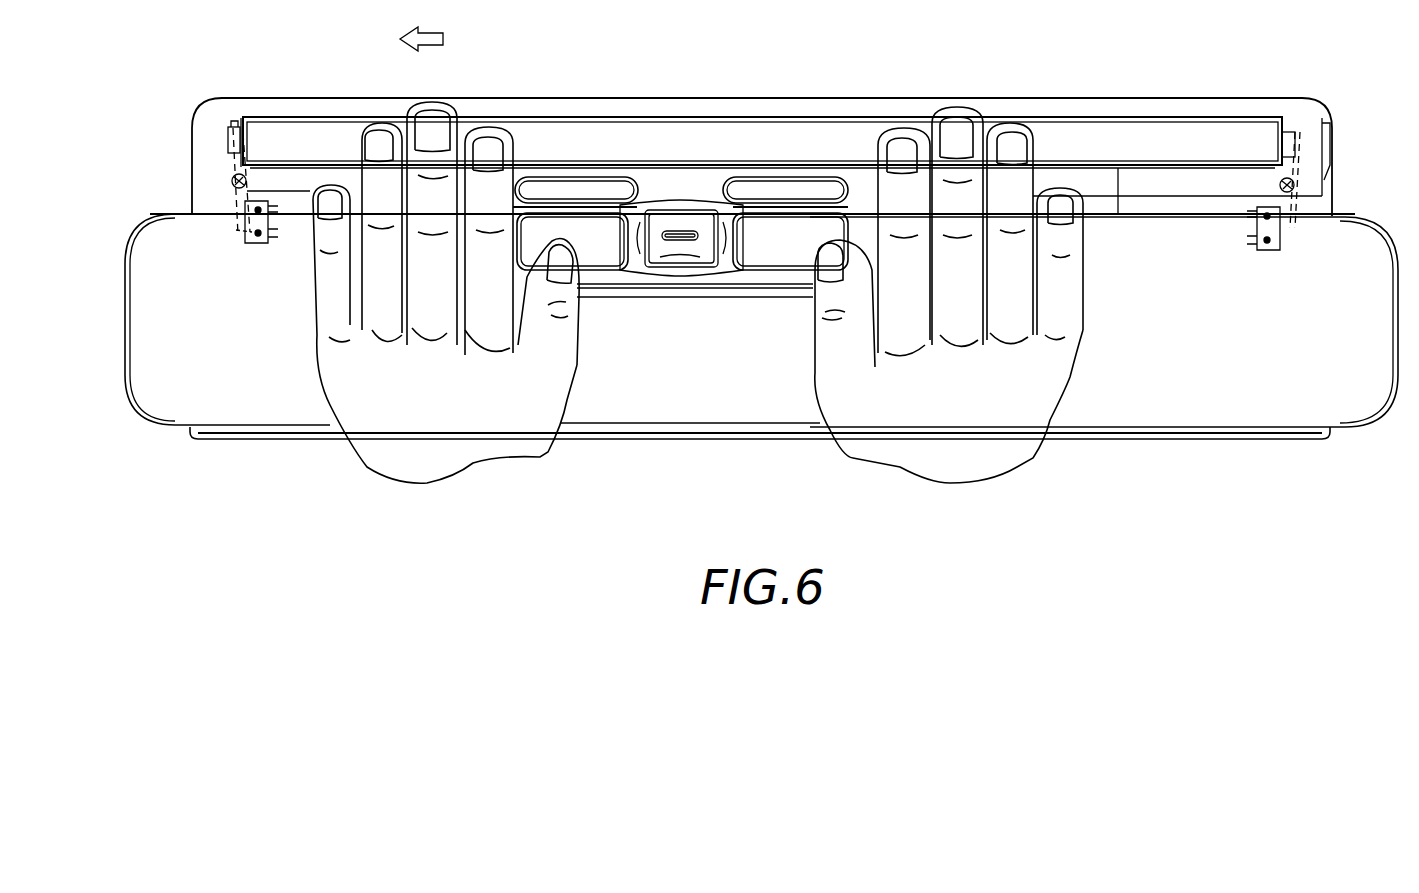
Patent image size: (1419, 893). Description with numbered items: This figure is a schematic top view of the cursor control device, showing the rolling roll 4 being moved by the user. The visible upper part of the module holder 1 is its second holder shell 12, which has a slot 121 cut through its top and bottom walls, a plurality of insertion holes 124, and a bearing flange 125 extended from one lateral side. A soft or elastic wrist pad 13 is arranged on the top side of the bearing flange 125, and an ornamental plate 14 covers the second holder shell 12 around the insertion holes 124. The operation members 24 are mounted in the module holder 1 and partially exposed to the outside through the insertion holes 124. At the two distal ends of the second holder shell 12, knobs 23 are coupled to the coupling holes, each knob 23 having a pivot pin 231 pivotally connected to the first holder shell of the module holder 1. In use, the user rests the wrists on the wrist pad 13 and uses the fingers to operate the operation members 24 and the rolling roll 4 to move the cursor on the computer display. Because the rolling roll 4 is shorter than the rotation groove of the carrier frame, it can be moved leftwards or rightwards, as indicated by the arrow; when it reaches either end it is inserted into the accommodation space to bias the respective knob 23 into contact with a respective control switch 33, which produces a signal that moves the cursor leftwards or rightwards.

The module holder 1 is at (671, 452).
The rolling roll 4 is at (556, 140).
The second holder shell 12 is at (354, 106).
The slot 121 is at (304, 118).
The insertion holes 124 is at (792, 215).
The bearing flange 125 is at (295, 432).
The wrist pad 13 is at (186, 396).
The ornamental plate 14 is at (688, 183).
The knobs 23 is at (237, 118).
The pivot pin 231 is at (232, 181).
The operation members 24 is at (670, 225).
The control switches 33 is at (256, 246).